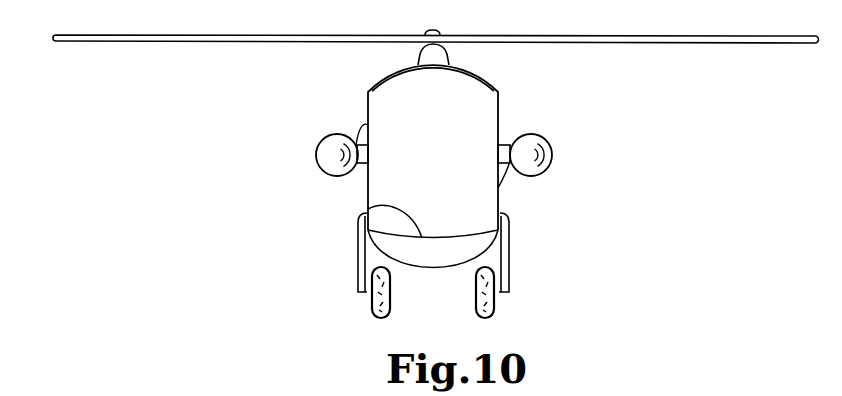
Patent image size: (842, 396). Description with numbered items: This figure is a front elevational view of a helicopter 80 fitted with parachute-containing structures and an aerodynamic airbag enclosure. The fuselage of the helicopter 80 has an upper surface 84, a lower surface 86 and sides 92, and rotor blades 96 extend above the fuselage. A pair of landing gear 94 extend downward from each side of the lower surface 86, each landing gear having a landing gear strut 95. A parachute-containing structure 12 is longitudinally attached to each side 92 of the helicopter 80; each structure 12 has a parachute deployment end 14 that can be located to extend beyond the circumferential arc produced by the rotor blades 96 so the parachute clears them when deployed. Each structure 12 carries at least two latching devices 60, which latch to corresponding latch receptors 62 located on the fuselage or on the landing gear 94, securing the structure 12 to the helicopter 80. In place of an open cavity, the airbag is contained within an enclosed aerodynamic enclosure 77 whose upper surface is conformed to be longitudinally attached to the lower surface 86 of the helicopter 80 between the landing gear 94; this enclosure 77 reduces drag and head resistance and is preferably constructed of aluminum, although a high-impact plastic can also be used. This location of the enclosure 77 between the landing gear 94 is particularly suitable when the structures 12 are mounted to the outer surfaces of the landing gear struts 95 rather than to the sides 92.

The parachute-containing structure 12 is at (336, 155).
The parachute deployment end 14 is at (321, 170).
The latching device 60 is at (505, 127).
The latch receptor 62 is at (503, 140).
The aerodynamic enclosure 77 is at (417, 257).
The helicopter 80 is at (490, 92).
The upper surface 84 is at (382, 70).
The lower surface 86 is at (367, 210).
The side 92 is at (367, 123).
The landing gear 94 is at (372, 298).
The landing gear strut 95 is at (358, 245).
The rotor blades 96 is at (766, 45).